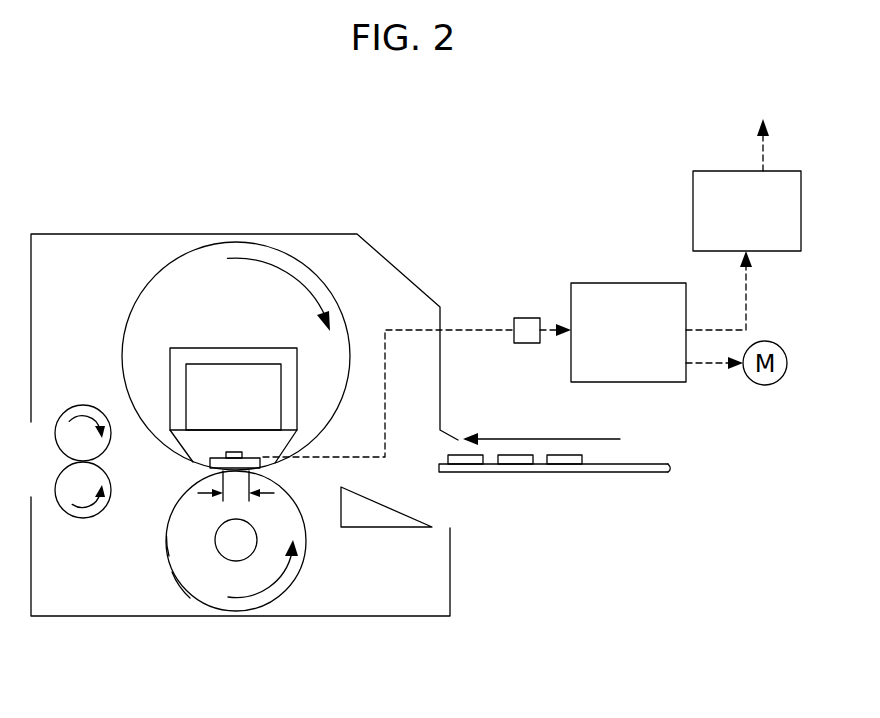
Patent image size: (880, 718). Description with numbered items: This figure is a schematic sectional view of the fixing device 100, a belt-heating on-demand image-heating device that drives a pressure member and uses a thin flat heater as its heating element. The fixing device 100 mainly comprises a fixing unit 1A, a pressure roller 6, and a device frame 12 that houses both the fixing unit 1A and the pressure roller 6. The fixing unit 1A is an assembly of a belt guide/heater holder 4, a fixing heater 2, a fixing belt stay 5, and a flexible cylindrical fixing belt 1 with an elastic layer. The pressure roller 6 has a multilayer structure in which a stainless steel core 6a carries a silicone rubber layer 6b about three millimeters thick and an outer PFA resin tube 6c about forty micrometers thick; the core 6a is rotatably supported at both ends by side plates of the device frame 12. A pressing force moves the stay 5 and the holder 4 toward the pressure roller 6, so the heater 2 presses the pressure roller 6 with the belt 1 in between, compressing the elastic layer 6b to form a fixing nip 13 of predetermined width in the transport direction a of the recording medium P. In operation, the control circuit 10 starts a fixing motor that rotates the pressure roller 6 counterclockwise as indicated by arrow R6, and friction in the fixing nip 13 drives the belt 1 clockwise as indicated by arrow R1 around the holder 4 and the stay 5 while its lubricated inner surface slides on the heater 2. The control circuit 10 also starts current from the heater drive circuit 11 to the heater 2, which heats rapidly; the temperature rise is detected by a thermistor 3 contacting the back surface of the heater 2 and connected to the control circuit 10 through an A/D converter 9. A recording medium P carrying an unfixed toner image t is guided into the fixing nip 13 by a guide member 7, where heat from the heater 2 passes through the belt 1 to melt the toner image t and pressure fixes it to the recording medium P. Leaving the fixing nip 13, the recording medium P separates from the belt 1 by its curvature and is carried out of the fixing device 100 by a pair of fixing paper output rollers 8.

The fixing device 100 is at (85, 215).
The fixing unit 1A is at (126, 291).
The fixing belt 1 is at (322, 278).
The arrow R1 is at (286, 308).
The fixing heater 2 is at (262, 465).
The thermistor 3 is at (232, 452).
The belt guide/heater holder 4 is at (293, 431).
The fixing belt stay 5 is at (230, 348).
The pressure roller 6 is at (302, 570).
The stainless steel core 6a is at (233, 552).
The silicone rubber layer 6b is at (175, 547).
The PFA resin tube 6c is at (182, 587).
The arrow R6 is at (263, 557).
The fixing nip 13 is at (198, 494).
The guide member 7 is at (378, 520).
The fixing paper output rollers 8 is at (80, 505).
The A/D converter 9 is at (523, 318).
The control circuit 10 is at (615, 283).
The heater drive circuit 11 is at (713, 171).
The device frame 12 is at (390, 617).
The transport direction a is at (541, 429).
The recording medium P is at (502, 474).
The unfixed toner image t is at (568, 455).